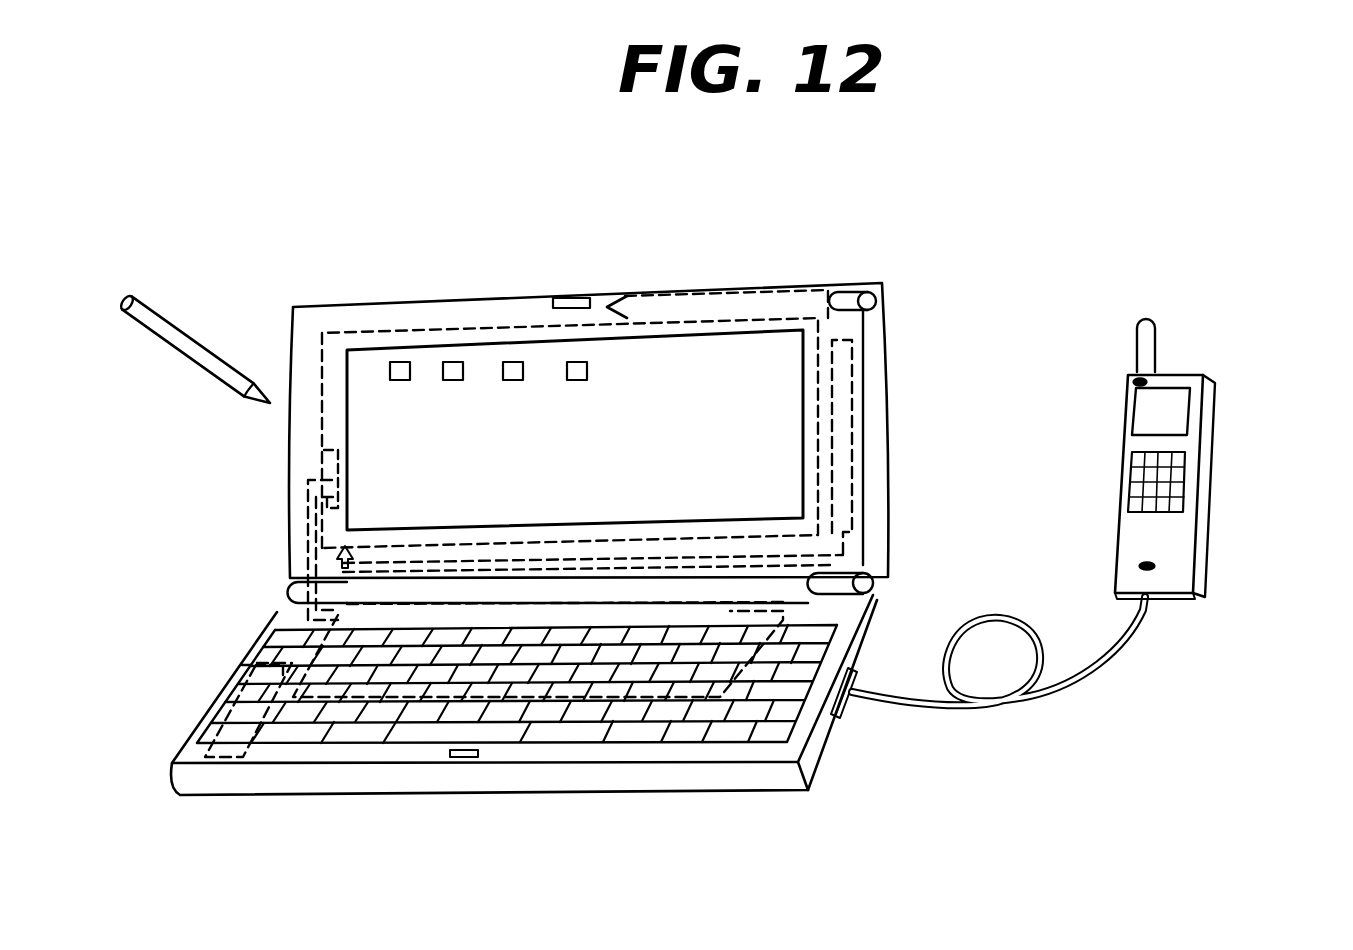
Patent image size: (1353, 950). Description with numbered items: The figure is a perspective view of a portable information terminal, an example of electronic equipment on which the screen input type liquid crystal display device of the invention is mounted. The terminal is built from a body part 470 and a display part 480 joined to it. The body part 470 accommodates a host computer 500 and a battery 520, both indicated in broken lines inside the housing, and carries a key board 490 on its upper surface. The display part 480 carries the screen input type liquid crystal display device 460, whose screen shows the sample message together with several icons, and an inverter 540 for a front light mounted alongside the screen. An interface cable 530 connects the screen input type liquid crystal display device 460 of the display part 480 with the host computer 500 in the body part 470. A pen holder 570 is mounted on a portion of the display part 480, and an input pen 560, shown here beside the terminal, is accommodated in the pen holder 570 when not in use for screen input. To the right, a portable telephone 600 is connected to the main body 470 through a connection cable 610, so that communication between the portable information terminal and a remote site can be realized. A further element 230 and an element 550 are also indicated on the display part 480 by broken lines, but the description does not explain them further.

The display element 230 is at (330, 455).
The screen input type liquid crystal display device 460 is at (341, 340).
The body part 470 is at (542, 778).
The display part 480 is at (508, 307).
The key board 490 is at (360, 714).
The host computer 500 is at (310, 637).
The battery 520 is at (200, 753).
The interface cable 530 is at (307, 520).
The inverter for a front light 540 is at (847, 385).
The signal line 550 is at (847, 547).
The input pen 560 is at (163, 328).
The pen holder 570 is at (847, 293).
The portable telephone 600 is at (1210, 403).
The connection cable 610 is at (1105, 668).